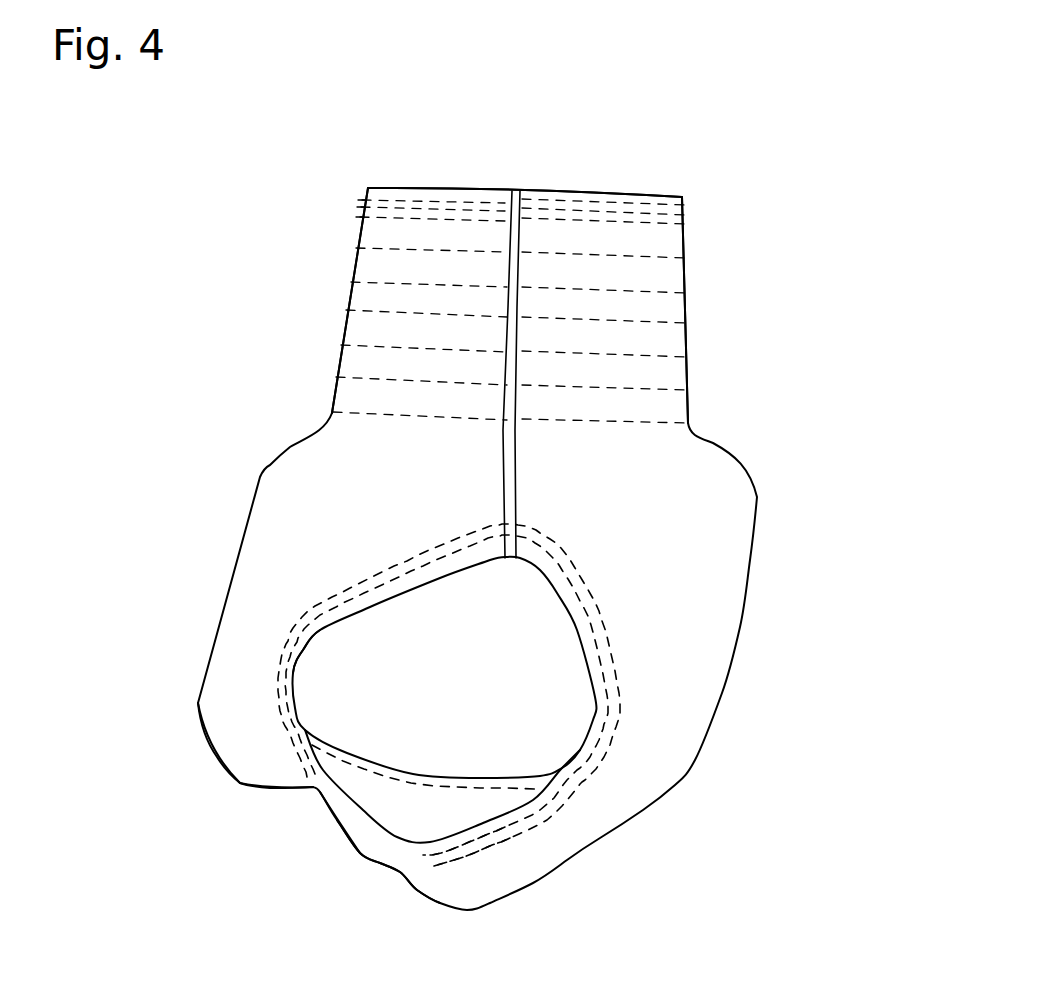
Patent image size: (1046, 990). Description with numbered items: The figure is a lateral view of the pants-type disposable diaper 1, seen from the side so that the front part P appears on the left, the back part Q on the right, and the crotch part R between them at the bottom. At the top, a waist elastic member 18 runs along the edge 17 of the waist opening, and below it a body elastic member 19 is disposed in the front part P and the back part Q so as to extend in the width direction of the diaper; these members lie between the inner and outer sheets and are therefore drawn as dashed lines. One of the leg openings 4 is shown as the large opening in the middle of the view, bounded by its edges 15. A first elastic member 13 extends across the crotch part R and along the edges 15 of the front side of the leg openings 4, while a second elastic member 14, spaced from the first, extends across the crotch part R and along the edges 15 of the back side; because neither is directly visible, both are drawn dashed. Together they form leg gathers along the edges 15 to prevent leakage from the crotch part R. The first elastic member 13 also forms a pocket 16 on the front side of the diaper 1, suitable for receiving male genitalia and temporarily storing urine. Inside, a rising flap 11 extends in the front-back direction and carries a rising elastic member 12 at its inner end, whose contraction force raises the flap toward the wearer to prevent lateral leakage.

The pants-type disposable diaper 1 is at (706, 192).
The leg openings 4 is at (348, 655).
The rising flap 11 is at (417, 815).
The rising elastic member 12 is at (370, 776).
The first elastic member 13 is at (320, 778).
The second elastic member 14 is at (557, 807).
The edges 15 is at (293, 675).
The pocket 16 is at (223, 770).
The edge 17 is at (645, 195).
The waist elastic member 18 is at (388, 217).
The body elastic member 19 is at (665, 354).
The front part P is at (356, 296).
The back part Q is at (688, 270).
The crotch part R is at (360, 857).